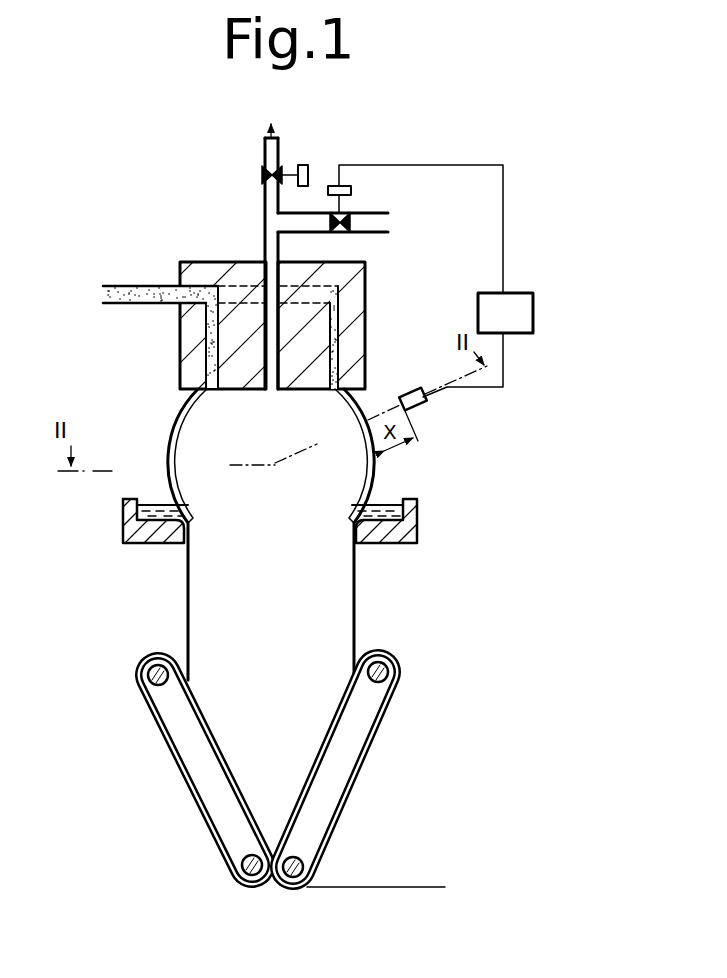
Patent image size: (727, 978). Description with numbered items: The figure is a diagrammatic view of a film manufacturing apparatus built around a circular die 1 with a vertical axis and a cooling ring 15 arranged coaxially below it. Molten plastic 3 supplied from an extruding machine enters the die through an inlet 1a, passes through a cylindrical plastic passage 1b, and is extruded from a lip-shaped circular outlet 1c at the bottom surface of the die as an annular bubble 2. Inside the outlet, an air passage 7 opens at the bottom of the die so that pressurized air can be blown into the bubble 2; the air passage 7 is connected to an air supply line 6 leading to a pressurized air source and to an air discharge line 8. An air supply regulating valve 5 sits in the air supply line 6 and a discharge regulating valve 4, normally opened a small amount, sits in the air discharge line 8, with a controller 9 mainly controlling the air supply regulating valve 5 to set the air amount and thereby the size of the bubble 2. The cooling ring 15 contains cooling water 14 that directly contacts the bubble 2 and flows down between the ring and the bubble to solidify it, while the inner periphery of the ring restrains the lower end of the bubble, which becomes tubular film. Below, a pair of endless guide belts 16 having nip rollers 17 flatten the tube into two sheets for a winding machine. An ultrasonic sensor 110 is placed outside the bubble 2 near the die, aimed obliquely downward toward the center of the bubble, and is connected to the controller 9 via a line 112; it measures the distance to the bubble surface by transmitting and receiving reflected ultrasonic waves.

The circular die 1 is at (365, 288).
The inlet 1a is at (177, 303).
The cylindrical plastic passage 1b is at (365, 336).
The lip-shaped circular outlet 1c is at (207, 374).
The bubble 2 is at (174, 447).
The molten plastic 3 is at (147, 286).
The discharge regulating valve 4 is at (304, 165).
The air supply regulating valve 5 is at (352, 190).
The air supply line 6 is at (403, 221).
The air passage 7 is at (262, 270).
The air discharge line 8 is at (282, 124).
The controller 9 is at (534, 305).
The cooling water 14 is at (390, 500).
The cooling ring 15 is at (418, 522).
The endless guide belts 16 is at (372, 745).
The nip rollers 17 is at (303, 877).
The ultrasonic sensor 110 is at (424, 405).
The line 112 is at (505, 382).